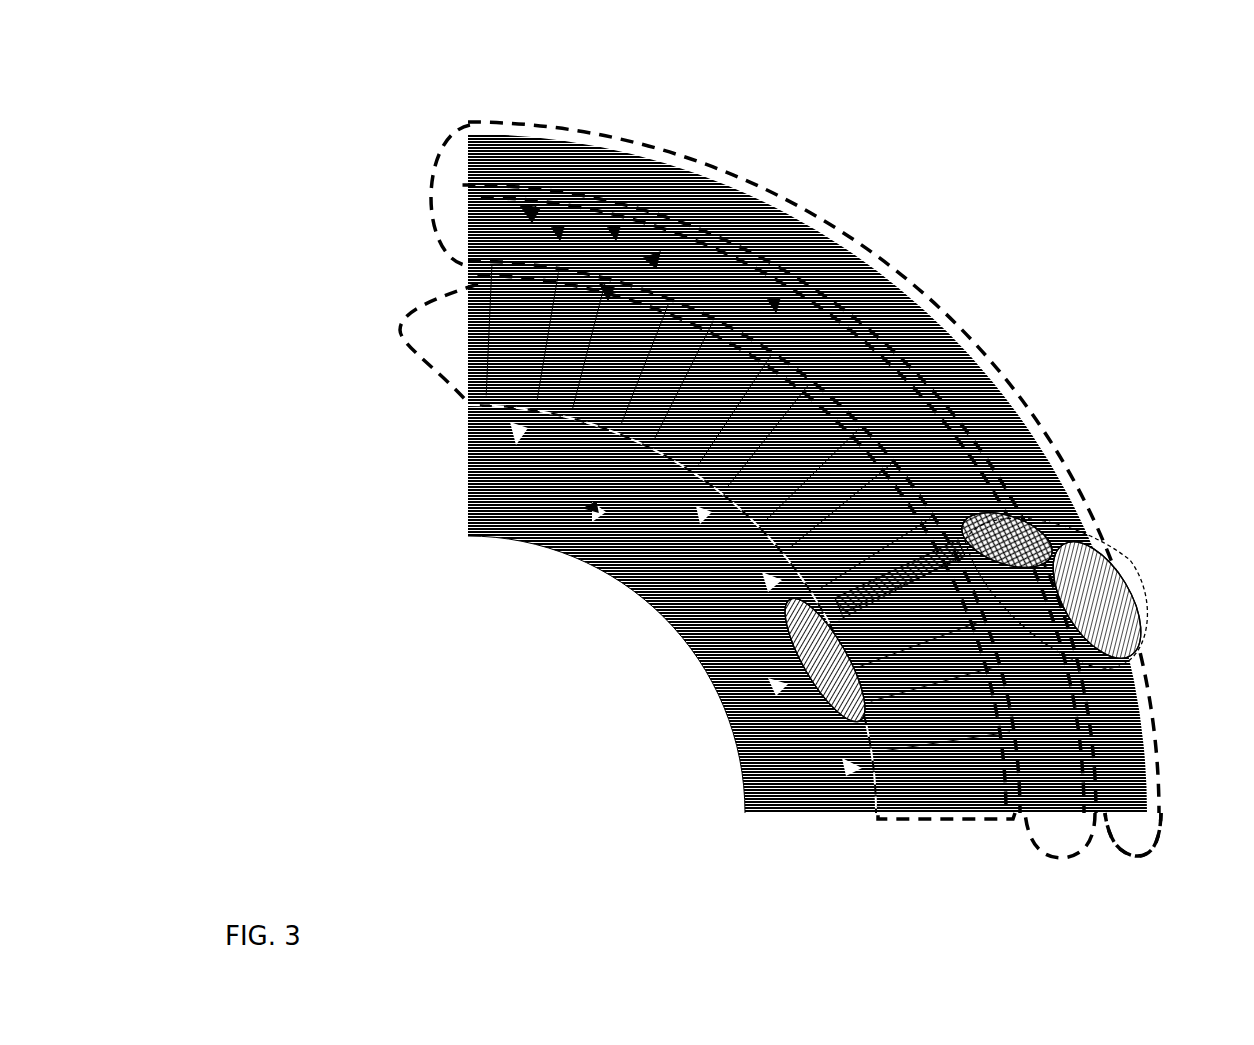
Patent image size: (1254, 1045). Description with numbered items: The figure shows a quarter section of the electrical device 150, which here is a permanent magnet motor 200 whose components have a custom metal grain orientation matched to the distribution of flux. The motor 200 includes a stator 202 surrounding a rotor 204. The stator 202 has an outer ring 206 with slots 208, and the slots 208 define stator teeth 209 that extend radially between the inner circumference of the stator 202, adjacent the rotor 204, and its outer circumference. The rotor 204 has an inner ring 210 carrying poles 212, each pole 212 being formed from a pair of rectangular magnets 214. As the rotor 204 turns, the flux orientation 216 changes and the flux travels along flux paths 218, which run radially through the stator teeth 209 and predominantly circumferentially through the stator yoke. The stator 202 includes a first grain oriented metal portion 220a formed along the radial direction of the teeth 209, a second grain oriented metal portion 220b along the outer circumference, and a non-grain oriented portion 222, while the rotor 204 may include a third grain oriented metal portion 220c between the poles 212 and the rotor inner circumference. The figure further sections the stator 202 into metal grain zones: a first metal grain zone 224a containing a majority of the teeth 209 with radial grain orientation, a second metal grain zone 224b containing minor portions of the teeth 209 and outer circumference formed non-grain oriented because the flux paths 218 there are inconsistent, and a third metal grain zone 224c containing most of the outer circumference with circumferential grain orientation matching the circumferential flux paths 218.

The electrical device 150 is at (375, 89).
The permanent magnet motor 200 is at (792, 816).
The stator 202 is at (859, 247).
The rotor 204 is at (665, 624).
The outer ring 206 is at (455, 383).
The slots 208 is at (528, 347).
The stator teeth 209 is at (478, 373).
The inner ring 210 is at (466, 472).
The poles 212 is at (591, 515).
The rectangular magnets 214 is at (557, 473).
The flux orientation 216 is at (528, 208).
The flux paths 218 is at (558, 230).
The first grain oriented metal portion 220a is at (985, 527).
The second grain oriented metal portion 220b is at (1100, 562).
The third grain oriented metal portion 220c is at (830, 663).
The non-grain oriented portion 222 is at (1017, 528).
The first metal grain zone 224a is at (927, 824).
The second metal grain zone 224b is at (1022, 858).
The third metal grain zone 224c is at (1128, 865).